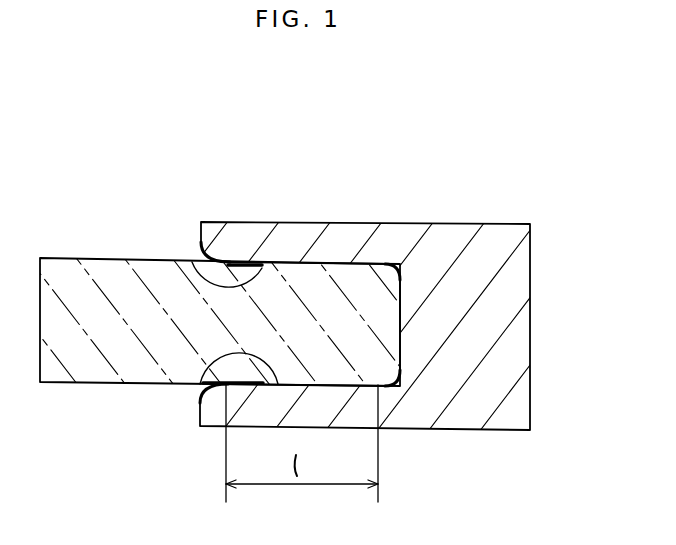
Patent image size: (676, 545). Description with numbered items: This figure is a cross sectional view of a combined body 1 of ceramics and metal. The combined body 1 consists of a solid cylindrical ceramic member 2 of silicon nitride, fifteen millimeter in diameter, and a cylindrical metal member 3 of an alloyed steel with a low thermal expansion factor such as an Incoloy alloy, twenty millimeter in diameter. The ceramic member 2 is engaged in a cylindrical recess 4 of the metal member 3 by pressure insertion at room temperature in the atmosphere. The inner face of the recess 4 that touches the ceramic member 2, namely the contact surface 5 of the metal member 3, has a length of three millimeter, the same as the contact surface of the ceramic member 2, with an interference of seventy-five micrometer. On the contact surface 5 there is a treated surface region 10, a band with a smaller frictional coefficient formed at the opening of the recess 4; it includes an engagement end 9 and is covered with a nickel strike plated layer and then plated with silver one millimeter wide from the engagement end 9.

The combined body 1 is at (501, 122).
The ceramic member 2 is at (52, 370).
The metal member 3 is at (498, 235).
The recess 4 is at (205, 262).
The contact surface 5 is at (200, 384).
The engagement end 9 is at (235, 262).
The treated surface region 10 is at (203, 398).